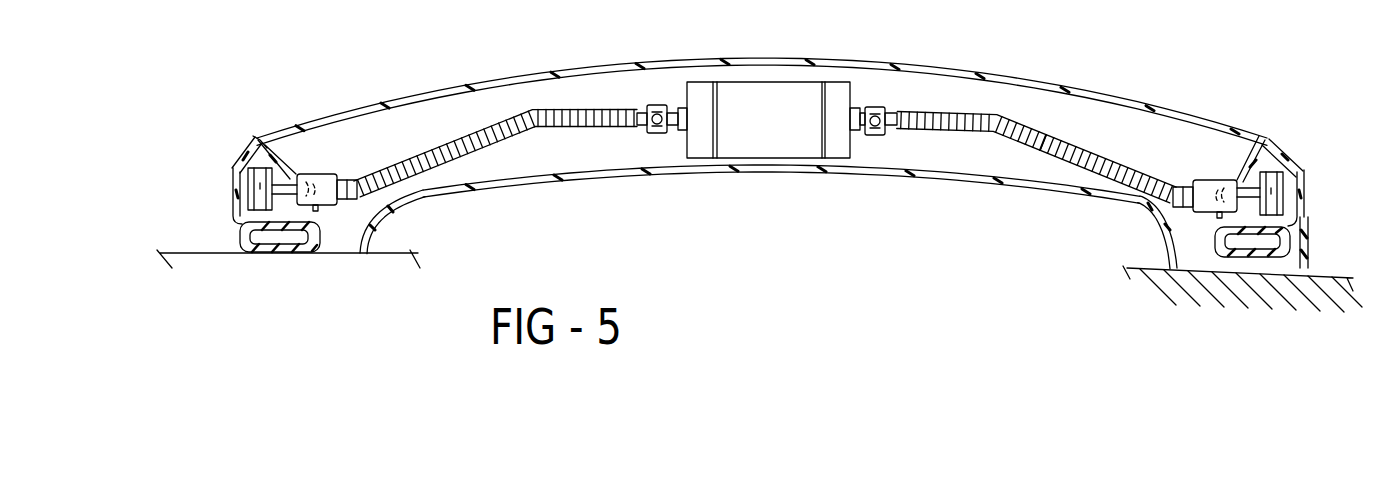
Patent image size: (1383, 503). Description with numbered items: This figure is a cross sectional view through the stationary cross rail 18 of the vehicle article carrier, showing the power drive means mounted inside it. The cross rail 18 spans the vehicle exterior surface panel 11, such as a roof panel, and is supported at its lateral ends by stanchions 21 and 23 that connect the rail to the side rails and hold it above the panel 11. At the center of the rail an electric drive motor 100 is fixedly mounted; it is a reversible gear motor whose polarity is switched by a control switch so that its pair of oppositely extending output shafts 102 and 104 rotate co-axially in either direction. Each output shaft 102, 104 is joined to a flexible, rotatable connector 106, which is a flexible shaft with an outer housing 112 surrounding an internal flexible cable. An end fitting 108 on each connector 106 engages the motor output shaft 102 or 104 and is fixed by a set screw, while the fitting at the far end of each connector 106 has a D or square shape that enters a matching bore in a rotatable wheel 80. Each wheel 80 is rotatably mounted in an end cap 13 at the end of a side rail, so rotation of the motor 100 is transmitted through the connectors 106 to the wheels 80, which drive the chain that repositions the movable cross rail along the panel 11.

The vehicle exterior surface panel 11 is at (187, 250).
The end cap 13 is at (233, 190).
The stationary cross rail 18 is at (557, 60).
The stanchion 21 is at (1173, 107).
The stanchion 23 is at (297, 120).
The rotatable wheel 80 is at (237, 167).
The electric drive motor 100 is at (803, 40).
The output shaft 102 is at (860, 143).
The output shaft 104 is at (680, 135).
The flexible rotatable connector 106 is at (387, 177).
The end fitting 108 is at (658, 105).
The outer housing 112 is at (1070, 150).